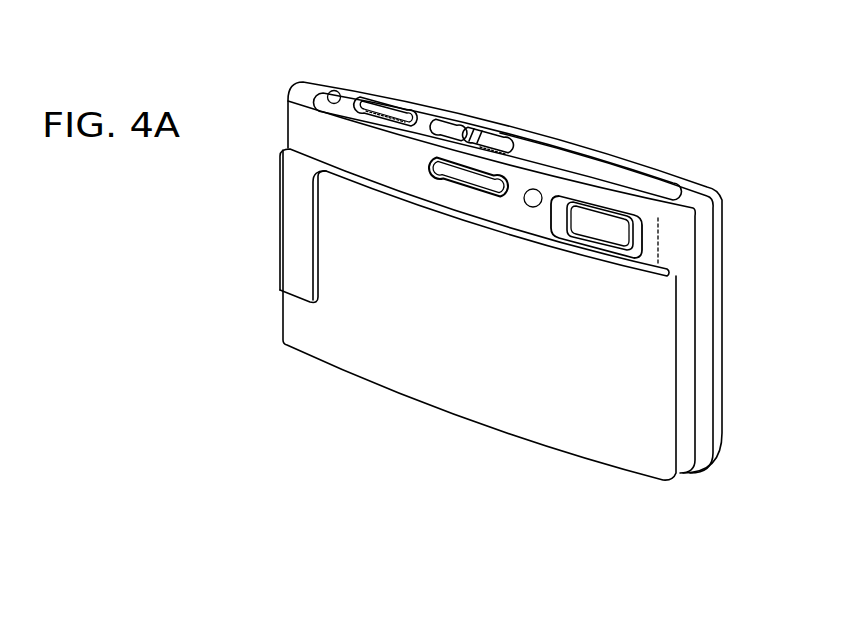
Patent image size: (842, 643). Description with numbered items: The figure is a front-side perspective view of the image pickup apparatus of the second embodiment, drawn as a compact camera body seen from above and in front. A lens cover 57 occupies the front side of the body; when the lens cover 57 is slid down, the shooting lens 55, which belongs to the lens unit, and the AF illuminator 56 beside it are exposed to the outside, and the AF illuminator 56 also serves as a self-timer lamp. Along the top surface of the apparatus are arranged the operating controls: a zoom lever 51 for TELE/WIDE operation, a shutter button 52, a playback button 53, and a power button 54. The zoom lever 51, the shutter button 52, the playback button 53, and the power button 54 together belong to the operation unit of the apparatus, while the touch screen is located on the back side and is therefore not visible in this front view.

The zoom lever 51 is at (327, 93).
The shutter button 52 is at (368, 103).
The playback button 53 is at (448, 128).
The power button 54 is at (501, 148).
The shooting lens 55 is at (618, 231).
The AF illuminator 56 is at (535, 194).
The lens cover 57 is at (648, 373).